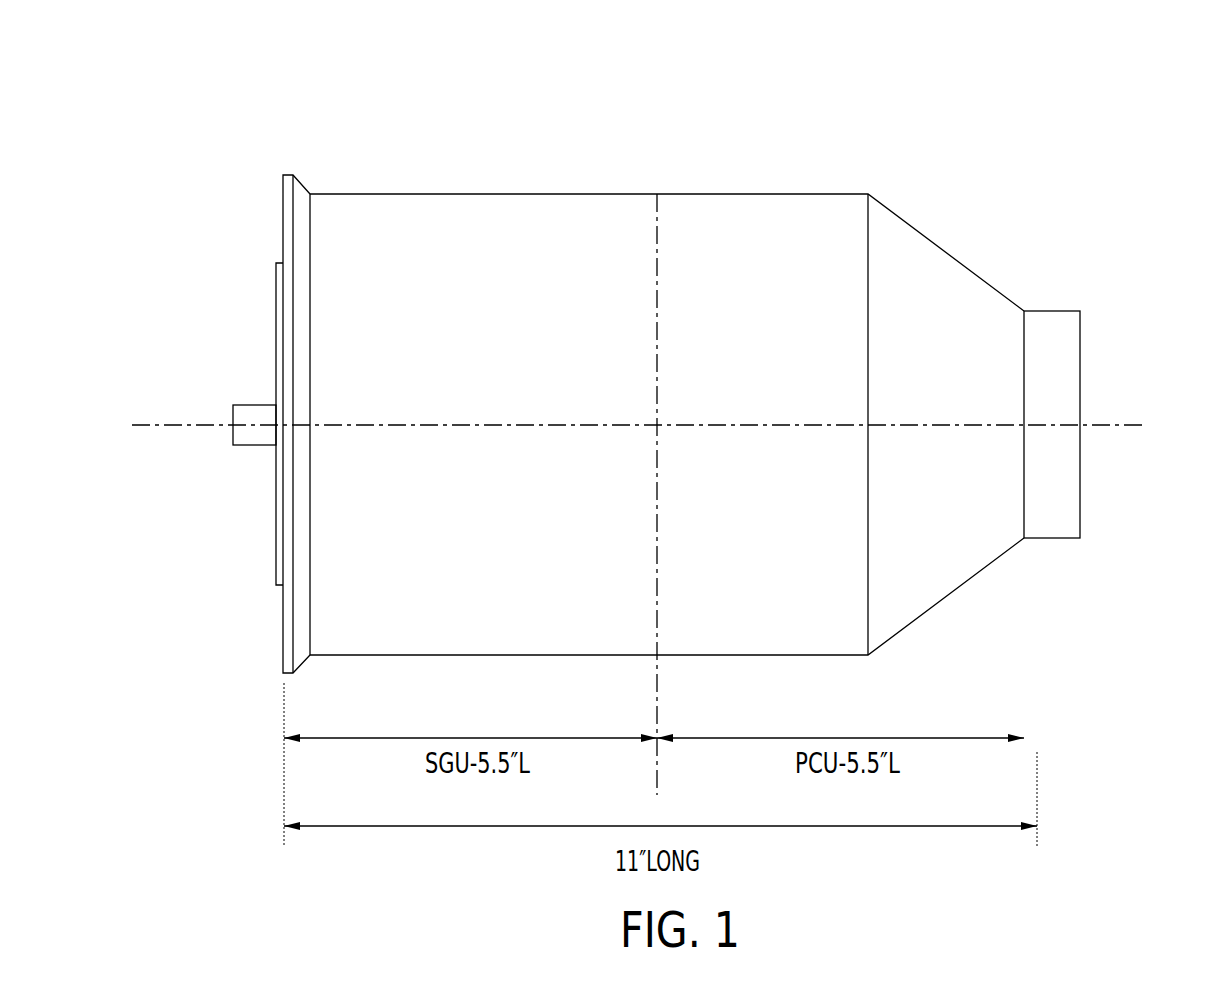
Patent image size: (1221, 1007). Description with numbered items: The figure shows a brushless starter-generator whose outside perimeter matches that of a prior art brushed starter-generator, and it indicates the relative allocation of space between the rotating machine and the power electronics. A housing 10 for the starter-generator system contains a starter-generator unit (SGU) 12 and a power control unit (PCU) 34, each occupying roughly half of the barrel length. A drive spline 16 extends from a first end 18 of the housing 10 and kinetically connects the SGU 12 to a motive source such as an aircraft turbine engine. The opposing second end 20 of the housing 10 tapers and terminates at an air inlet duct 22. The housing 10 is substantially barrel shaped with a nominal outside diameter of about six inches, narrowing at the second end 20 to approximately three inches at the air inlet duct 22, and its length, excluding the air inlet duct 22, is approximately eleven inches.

The housing 10 is at (699, 381).
The starter-generator unit (SGU) 12 is at (489, 655).
The drive spline 16 is at (250, 425).
The first end 18 is at (283, 240).
The second end 20 is at (1024, 380).
The air inlet duct 22 is at (1080, 328).
The power control unit (PCU) 34 is at (826, 655).